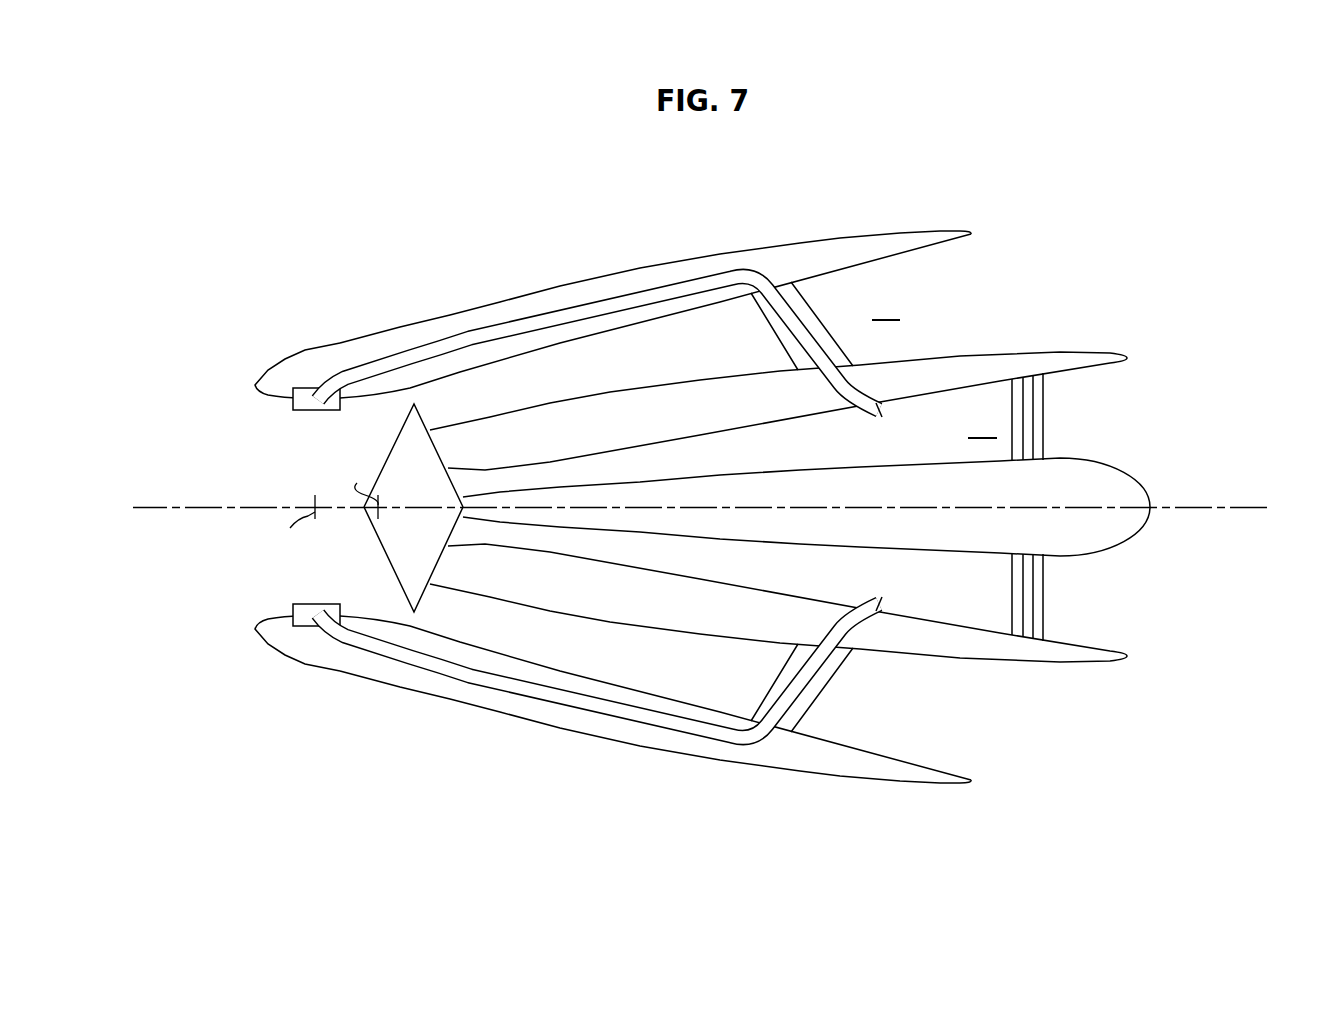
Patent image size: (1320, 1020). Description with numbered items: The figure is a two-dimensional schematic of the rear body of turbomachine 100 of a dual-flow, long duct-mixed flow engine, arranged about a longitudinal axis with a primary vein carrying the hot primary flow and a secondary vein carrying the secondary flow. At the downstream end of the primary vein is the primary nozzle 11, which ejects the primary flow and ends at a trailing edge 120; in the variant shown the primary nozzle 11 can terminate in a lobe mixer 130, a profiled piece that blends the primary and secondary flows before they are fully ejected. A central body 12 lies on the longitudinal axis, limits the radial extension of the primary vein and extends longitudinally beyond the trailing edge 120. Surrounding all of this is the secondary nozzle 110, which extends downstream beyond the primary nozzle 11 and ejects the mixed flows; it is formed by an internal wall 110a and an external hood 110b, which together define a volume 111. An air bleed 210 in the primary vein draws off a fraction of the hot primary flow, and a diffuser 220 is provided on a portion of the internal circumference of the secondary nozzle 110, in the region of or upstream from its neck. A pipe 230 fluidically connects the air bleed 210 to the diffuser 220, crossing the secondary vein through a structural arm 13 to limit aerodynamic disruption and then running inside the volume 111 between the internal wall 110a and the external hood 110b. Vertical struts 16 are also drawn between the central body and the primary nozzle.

The rear body of turbomachine 100 is at (809, 175).
The secondary nozzle 110 is at (558, 280).
The internal wall 110a is at (458, 372).
The external hood 110b is at (400, 326).
The volume 111 is at (344, 358).
The pipe 230 is at (670, 281).
The air bleed 210 is at (877, 404).
The diffuser 220 is at (316, 421).
The primary nozzle 11 is at (611, 383).
The central body 12 is at (706, 468).
The structural arm 13 is at (761, 339).
The vertical struts 16 is at (1052, 415).
The trailing edge 120 is at (391, 451).
The lobe mixer 130 is at (374, 548).